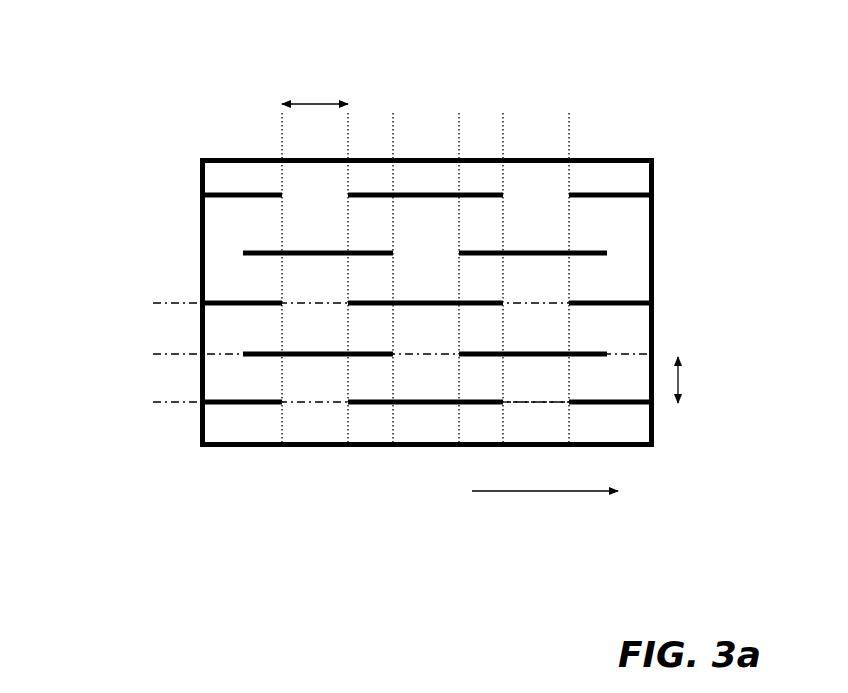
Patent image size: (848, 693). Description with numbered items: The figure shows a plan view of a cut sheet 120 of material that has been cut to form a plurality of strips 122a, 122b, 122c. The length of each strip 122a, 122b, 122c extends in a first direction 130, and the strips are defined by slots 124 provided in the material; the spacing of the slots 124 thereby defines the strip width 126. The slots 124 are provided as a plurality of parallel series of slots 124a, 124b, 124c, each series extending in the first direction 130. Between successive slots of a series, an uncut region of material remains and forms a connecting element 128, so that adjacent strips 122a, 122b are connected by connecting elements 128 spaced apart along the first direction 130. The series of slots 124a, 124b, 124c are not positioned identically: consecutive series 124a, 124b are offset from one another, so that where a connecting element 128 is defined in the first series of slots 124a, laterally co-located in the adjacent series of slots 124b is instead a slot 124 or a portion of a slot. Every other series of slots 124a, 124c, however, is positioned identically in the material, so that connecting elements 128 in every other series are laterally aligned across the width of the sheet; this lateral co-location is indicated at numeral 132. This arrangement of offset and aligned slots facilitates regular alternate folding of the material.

The cut sheet 120 is at (605, 98).
The strip 122a is at (217, 427).
The strip 122b is at (207, 377).
The strip 122c is at (205, 332).
The slots 124 is at (418, 403).
The first series of slots 124a is at (597, 392).
The second series of slots 124b is at (530, 348).
The third series of slots 124c is at (595, 290).
The strip width 126 is at (722, 380).
The connecting element 128 is at (530, 402).
The first direction 130 is at (545, 517).
The lateral co-location of connecting elements 132 is at (315, 74).